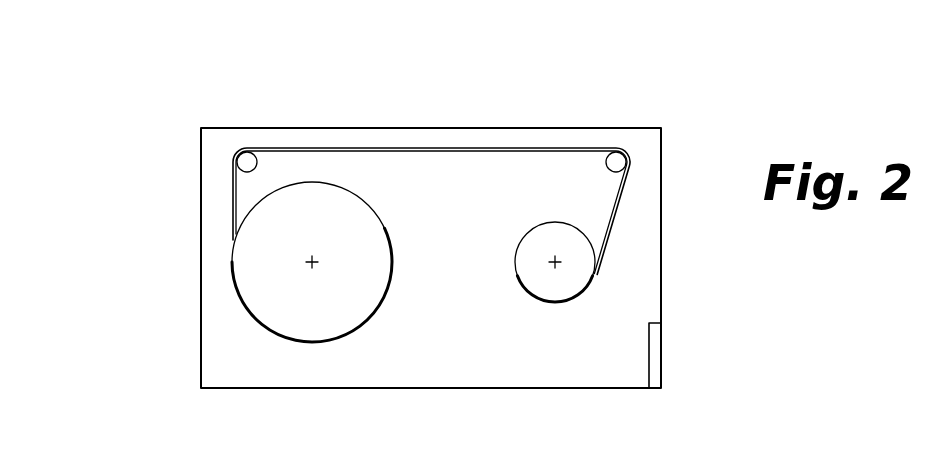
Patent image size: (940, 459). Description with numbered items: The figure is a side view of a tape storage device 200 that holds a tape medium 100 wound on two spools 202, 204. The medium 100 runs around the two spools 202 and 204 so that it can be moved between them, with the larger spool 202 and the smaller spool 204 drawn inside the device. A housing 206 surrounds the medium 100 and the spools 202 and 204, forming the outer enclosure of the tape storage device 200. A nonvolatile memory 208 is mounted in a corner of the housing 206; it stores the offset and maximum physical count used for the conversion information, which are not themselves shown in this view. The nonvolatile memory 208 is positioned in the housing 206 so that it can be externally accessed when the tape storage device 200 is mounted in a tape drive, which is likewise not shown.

The tape storage device 200 is at (381, 88).
The medium 100 is at (497, 148).
The spool 202 is at (253, 292).
The spool 204 is at (585, 280).
The housing 206 is at (265, 390).
The nonvolatile memory 208 is at (657, 346).